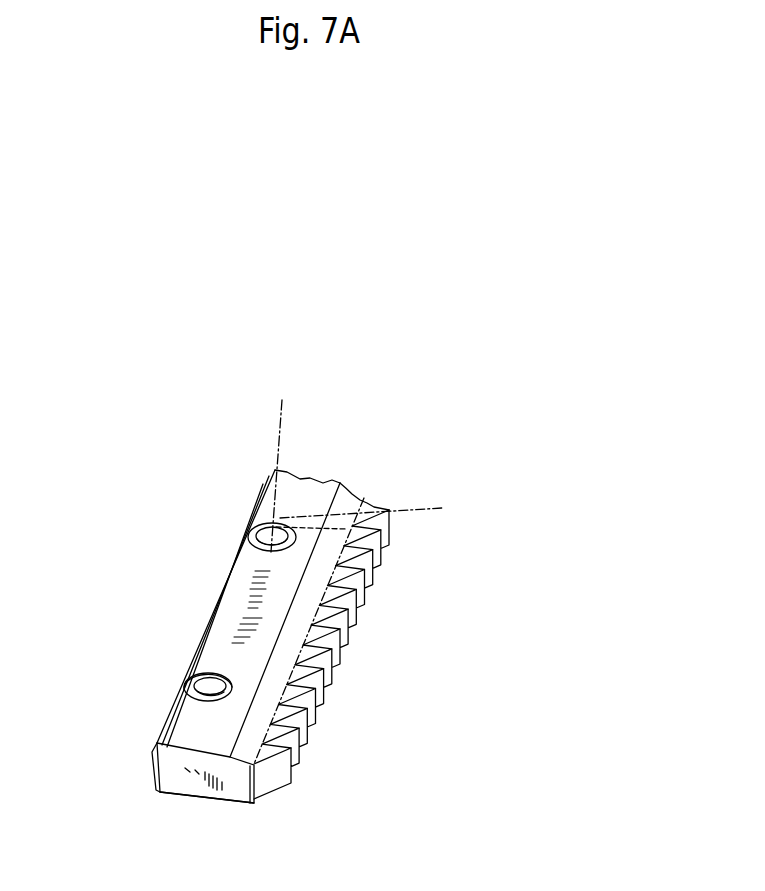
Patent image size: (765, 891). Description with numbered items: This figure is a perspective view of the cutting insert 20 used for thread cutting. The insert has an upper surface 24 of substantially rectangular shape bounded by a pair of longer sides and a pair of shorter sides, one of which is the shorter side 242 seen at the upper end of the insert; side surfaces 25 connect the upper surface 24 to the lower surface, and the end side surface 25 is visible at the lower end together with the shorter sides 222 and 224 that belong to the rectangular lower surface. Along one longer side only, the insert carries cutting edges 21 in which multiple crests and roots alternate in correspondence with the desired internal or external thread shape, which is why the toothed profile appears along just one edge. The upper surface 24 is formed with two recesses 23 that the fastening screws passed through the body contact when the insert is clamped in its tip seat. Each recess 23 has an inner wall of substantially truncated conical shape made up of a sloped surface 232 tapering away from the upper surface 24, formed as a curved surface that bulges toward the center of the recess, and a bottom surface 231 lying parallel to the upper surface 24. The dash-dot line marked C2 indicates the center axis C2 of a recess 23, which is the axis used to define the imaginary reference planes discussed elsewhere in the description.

The cutting insert 20 is at (310, 638).
The cutting edges 21 is at (345, 650).
The recesses 23 is at (252, 528).
The upper surface 24 is at (287, 577).
The side surfaces 25 is at (178, 778).
The shorter side 222 is at (432, 541).
The shorter side 224 is at (196, 800).
The bottom surface 231 is at (200, 691).
The sloped surface 232 is at (222, 682).
The shorter side 242 is at (334, 482).
The center axis C2 is at (285, 428).